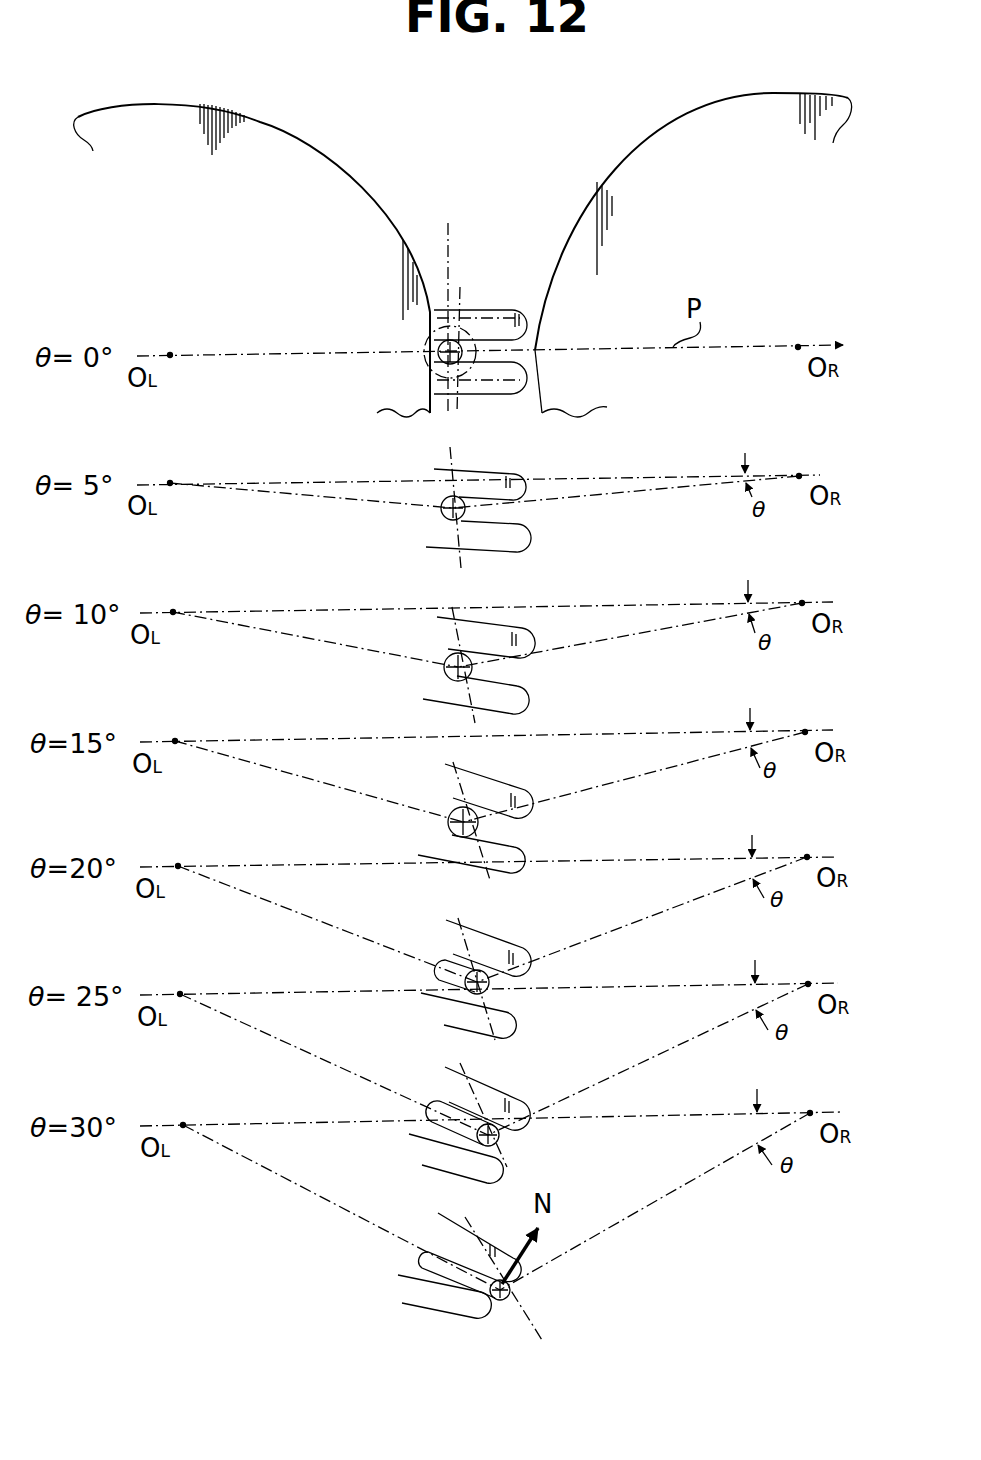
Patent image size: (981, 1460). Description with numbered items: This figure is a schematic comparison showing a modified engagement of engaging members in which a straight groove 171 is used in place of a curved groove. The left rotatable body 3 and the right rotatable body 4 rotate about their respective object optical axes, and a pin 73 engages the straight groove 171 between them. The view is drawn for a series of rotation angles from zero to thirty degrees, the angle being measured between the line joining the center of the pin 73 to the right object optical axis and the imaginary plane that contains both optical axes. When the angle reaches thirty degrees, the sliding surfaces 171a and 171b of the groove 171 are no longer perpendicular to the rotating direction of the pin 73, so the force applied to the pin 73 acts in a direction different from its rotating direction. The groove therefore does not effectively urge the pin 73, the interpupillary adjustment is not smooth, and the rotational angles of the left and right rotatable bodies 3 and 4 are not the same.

The left rotatable body 3 is at (383, 158).
The right rotatable body 4 is at (600, 177).
The pin 73 is at (438, 354).
The straight groove 171 is at (522, 353).
The sliding surface 171a is at (438, 1247).
The sliding surface 171b is at (450, 1303).